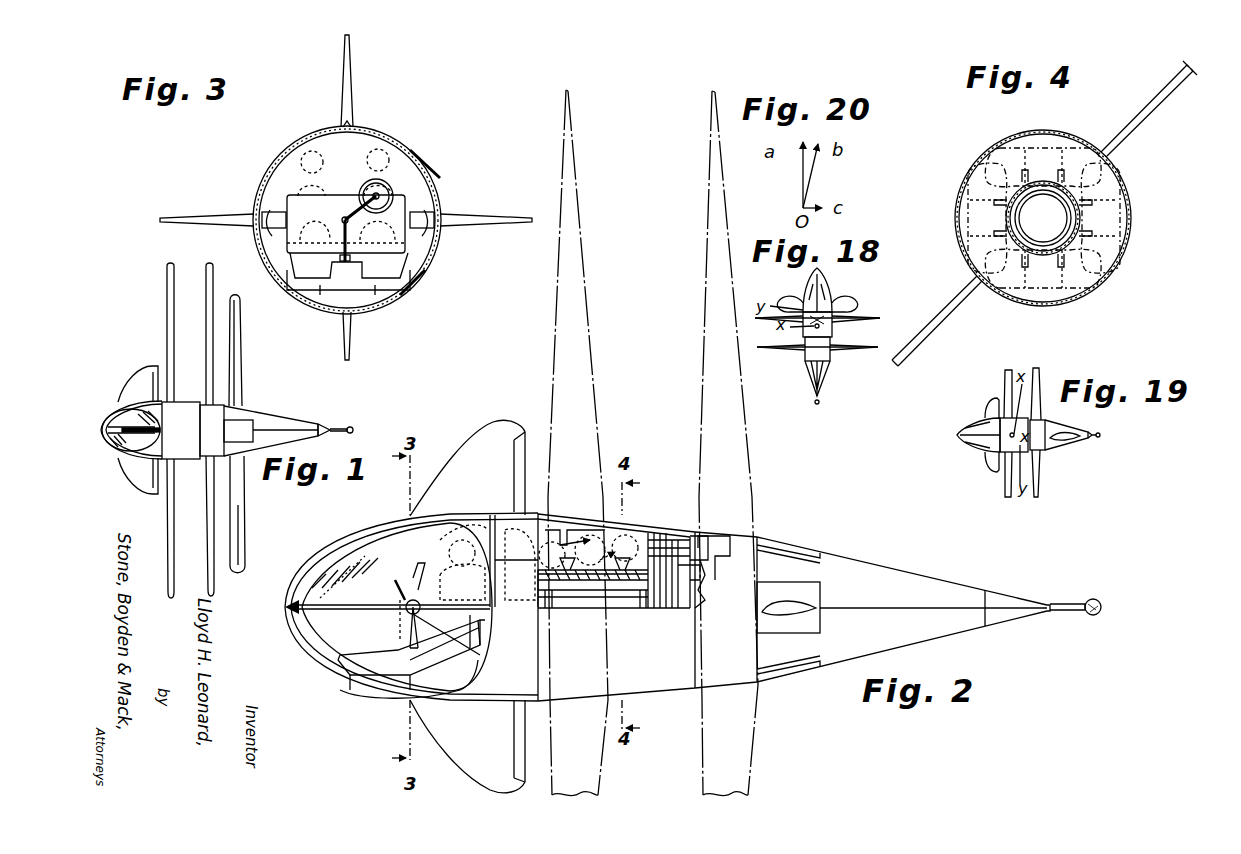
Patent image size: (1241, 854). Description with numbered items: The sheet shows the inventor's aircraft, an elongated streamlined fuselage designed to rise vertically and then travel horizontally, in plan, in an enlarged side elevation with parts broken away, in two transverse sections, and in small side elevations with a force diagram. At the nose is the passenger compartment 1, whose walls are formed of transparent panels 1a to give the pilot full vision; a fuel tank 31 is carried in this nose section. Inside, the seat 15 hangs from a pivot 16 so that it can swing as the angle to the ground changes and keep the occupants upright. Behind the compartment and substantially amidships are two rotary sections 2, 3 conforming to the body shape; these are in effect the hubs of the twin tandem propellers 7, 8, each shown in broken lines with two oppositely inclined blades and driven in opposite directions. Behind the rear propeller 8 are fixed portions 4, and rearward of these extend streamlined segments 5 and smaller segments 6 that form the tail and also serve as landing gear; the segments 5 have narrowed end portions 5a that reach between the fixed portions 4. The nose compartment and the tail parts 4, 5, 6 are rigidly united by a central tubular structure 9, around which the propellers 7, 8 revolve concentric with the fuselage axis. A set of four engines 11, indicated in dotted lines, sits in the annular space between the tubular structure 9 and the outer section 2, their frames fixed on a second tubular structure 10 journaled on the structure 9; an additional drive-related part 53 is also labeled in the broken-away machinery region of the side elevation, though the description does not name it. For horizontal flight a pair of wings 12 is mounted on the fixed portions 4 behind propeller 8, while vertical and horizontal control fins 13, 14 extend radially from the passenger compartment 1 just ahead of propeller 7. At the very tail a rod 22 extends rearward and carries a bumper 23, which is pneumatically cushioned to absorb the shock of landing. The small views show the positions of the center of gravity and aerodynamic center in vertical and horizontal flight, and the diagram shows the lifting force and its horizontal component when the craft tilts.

In FIG. 3, the passenger compartment 1 is at (400, 140).
In FIG. 2, the passenger compartment 1 is at (502, 694).
In FIG. 3, the transparent panels 1a is at (418, 180).
In FIG. 1, the transparent panels 1a is at (116, 424).
In FIG. 2, the transparent panels 1a is at (338, 568).
In FIG. 1, the rotary section 2 is at (185, 458).
In FIG. 2, the rotary section 2 is at (660, 688).
In FIG. 4, the rotary section 2 is at (954, 217).
In FIG. 1, the rotary section 3 is at (206, 406).
In FIG. 2, the rotary section 3 is at (728, 690).
In FIG. 18, the rotary section 3 is at (832, 316).
In FIG. 1, the fixed portions 4 is at (246, 428).
In FIG. 2, the fixed portions 4 is at (822, 598).
In FIG. 1, the streamlined segments 5 is at (292, 420).
In FIG. 2, the streamlined segments 5 is at (919, 574).
In FIG. 2, the narrowed end portions 5a is at (797, 544).
In FIG. 1, the smaller segments 6 is at (322, 424).
In FIG. 2, the smaller segments 6 is at (1016, 602).
In FIG. 1, the propeller 7 is at (167, 340).
In FIG. 2, the propeller 7 is at (590, 344).
In FIG. 4, the propeller 7 is at (1148, 116).
In FIG. 18, the propeller 7 is at (872, 318).
In FIG. 19, the propeller 7 is at (1006, 372).
In FIG. 1, the propeller 8 is at (206, 338).
In FIG. 2, the propeller 8 is at (700, 370).
In FIG. 18, the propeller 8 is at (870, 349).
In FIG. 19, the propeller 8 is at (1038, 372).
In FIG. 2, the central tubular structure 9 is at (596, 605).
In FIG. 4, the central tubular structure 9 is at (1064, 202).
In FIG. 2, the second tubular structure 10 is at (597, 578).
In FIG. 4, the second tubular structure 10 is at (1046, 182).
In FIG. 2, the engines 11 is at (580, 520).
In FIG. 4, the engines 11 is at (985, 176).
In FIG. 1, the wings 12 is at (240, 376).
In FIG. 2, the wings 12 is at (780, 608).
In FIG. 18, the wings 12 is at (812, 366).
In FIG. 19, the wings 12 is at (1062, 440).
In FIG. 3, the vertical control fins 13 is at (348, 90).
In FIG. 1, the vertical control fins 13 is at (155, 426).
In FIG. 2, the vertical control fins 13 is at (486, 438).
In FIG. 18, the vertical control fins 13 is at (840, 302).
In FIG. 19, the vertical control fins 13 is at (988, 412).
In FIG. 3, the horizontal control fins 14 is at (212, 214).
In FIG. 1, the horizontal control fins 14 is at (140, 380).
In FIG. 18, the horizontal control fins 14 is at (805, 300).
In FIG. 19, the horizontal control fins 14 is at (985, 452).
In FIG. 3, the seat 15 is at (398, 214).
In FIG. 2, the seat 15 is at (480, 640).
In FIG. 3, the pivot 16 is at (264, 228).
In FIG. 2, the pivot 16 is at (416, 600).
In FIG. 2, the rod 22 is at (1066, 612).
In FIG. 1, the bumper 23 is at (354, 428).
In FIG. 2, the bumper 23 is at (1097, 600).
In FIG. 2, the fuel tank 31 is at (491, 572).
In FIG. 2, the gear unit 53 is at (660, 532).